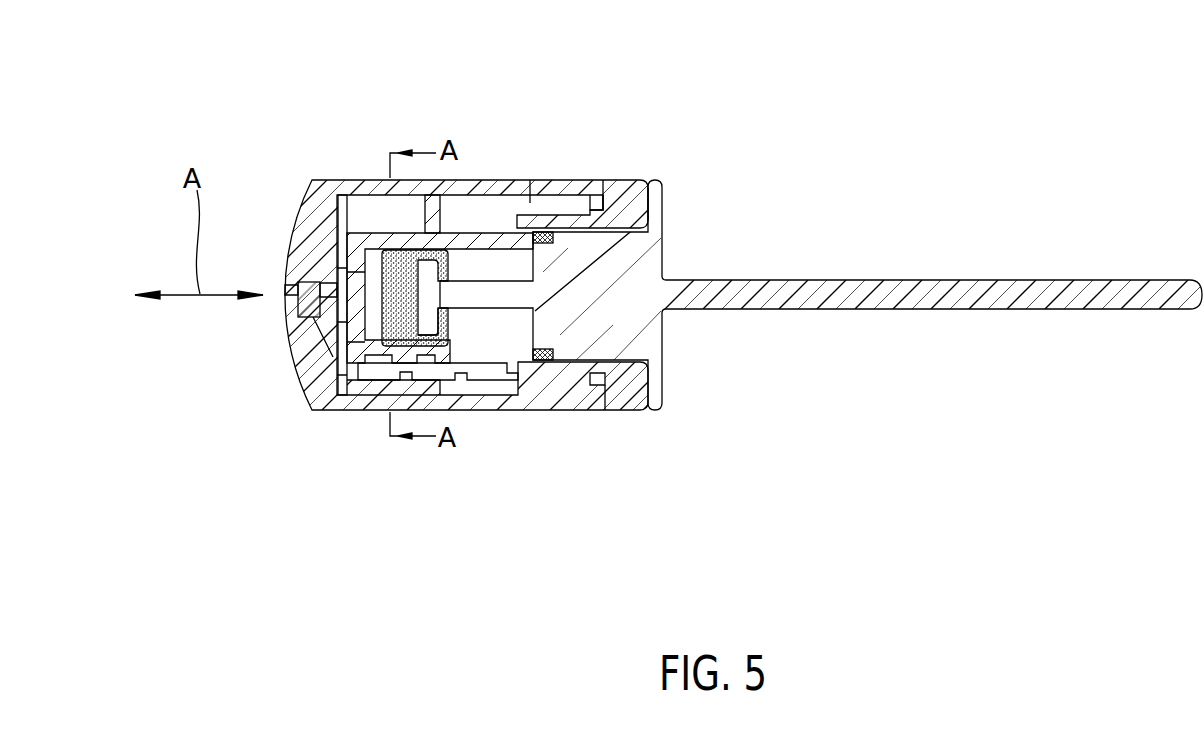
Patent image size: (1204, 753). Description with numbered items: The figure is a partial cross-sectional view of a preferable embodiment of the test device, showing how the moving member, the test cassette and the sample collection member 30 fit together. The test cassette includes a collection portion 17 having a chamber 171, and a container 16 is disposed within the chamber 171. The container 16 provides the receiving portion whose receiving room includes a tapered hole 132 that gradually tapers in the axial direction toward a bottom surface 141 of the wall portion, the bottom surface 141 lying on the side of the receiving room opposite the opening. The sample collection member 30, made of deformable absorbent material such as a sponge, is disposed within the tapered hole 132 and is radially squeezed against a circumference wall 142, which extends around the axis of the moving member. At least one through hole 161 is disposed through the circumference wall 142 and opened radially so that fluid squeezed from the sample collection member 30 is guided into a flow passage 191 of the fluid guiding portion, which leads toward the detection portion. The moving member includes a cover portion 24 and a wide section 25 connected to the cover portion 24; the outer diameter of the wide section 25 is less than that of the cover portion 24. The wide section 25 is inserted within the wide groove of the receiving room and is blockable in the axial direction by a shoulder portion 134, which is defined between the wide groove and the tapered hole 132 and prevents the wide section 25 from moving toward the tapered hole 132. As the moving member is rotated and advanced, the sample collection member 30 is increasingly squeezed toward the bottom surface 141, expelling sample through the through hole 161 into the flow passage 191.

The container 16 is at (347, 195).
The collection portion 17 is at (603, 180).
The chamber 171 is at (530, 180).
The shoulder portion 134 is at (602, 195).
The cover portion 24 is at (655, 207).
The wide section 25 is at (607, 252).
The sample collection member 30 is at (418, 250).
The tapered hole 132 is at (510, 362).
The bottom surface 141 is at (338, 325).
The circumference wall 142 is at (402, 252).
The through hole 161 is at (448, 352).
The flow passage 191 is at (440, 348).